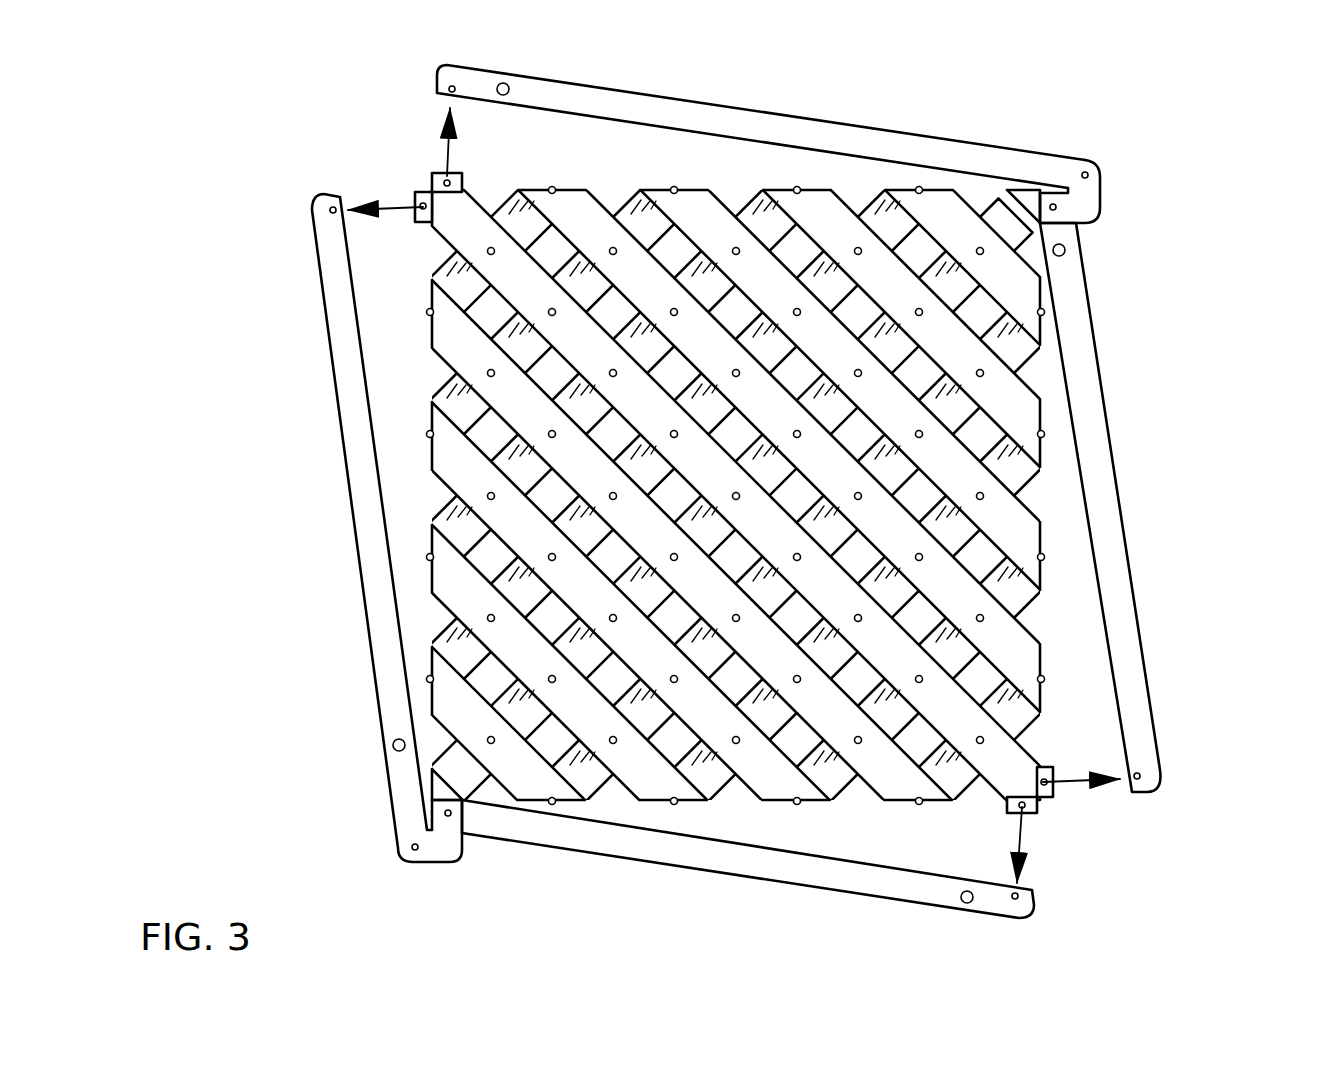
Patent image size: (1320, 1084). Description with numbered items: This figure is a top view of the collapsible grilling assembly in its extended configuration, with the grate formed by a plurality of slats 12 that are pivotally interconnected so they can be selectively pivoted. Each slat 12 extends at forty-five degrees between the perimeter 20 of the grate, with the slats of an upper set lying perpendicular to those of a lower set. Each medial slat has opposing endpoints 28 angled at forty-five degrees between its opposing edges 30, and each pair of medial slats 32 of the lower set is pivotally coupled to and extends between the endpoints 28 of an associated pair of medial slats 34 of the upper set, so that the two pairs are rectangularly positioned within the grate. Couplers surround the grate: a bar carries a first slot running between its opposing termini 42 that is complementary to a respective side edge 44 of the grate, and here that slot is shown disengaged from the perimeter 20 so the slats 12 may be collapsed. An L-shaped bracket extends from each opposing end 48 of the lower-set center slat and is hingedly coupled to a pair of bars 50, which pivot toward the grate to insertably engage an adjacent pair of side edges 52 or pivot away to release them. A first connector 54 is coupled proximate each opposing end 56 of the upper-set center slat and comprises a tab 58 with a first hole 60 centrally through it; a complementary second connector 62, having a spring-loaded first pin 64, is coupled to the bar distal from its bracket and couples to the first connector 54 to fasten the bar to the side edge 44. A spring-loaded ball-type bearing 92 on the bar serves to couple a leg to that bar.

The slat 12 is at (463, 588).
The perimeter 20 is at (427, 443).
The opposing endpoint 28 is at (427, 300).
The opposing edge 30 is at (742, 196).
The medial slat of the lower set 32 is at (653, 352).
The medial slat of the upper set 34 is at (930, 360).
The opposing terminus 42 is at (1028, 915).
The side edge 44 is at (427, 537).
The opposing end of the center slat of the lower set 48 is at (1040, 187).
The bar 50 is at (923, 137).
The side edge 52 is at (935, 358).
The first connector 54 is at (1047, 820).
The opposing end of the center slat of the upper set 56 is at (1033, 787).
The tab 58 is at (410, 187).
The first hole 60 is at (436, 176).
The second connector 62 is at (1033, 897).
The first pin 64 is at (444, 87).
The bearing 92 is at (516, 81).